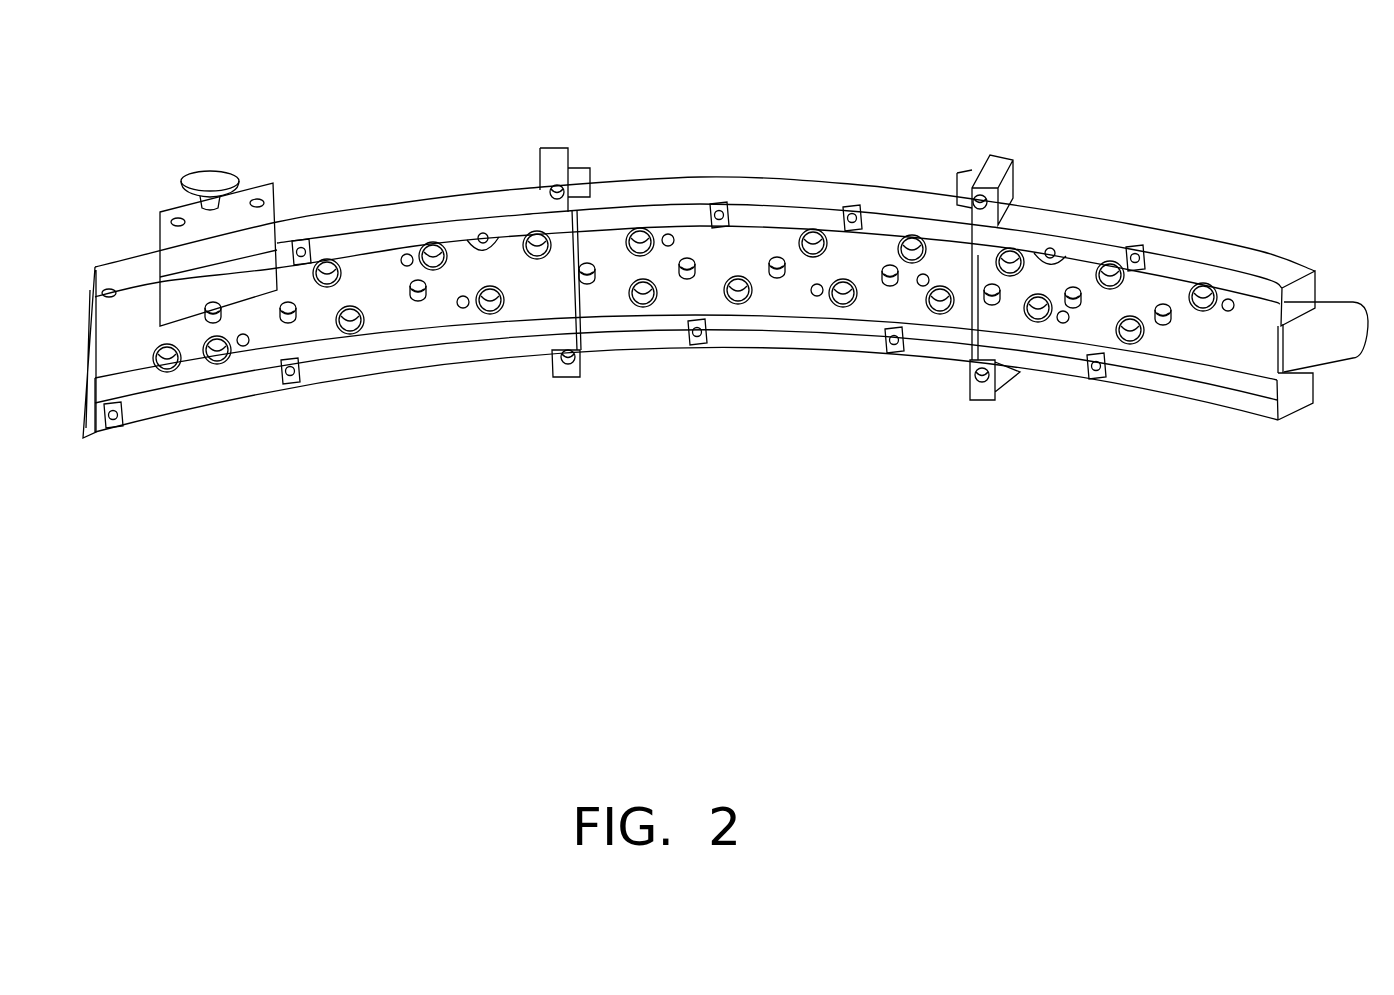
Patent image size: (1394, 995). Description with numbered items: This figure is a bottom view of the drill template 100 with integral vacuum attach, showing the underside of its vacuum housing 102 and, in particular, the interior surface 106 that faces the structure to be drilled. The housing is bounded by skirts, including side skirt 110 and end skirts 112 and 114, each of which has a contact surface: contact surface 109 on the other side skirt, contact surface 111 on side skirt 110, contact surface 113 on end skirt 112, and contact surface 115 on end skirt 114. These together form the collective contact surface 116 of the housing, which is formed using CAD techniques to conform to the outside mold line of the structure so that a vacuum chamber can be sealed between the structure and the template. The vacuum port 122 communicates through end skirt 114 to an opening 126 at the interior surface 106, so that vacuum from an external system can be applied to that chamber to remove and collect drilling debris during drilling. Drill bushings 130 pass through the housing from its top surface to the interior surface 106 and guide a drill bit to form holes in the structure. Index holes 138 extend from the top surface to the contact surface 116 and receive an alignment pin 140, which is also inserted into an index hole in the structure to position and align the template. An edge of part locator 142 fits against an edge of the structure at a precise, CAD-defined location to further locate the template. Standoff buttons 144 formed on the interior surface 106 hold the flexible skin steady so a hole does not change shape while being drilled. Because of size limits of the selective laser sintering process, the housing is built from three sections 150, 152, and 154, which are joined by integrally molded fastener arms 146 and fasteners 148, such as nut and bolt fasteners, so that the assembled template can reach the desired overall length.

The drill template 100 is at (1085, 118).
The vacuum housing 102 is at (705, 146).
The interior surface 106 is at (778, 247).
The contact surface 109 is at (1140, 380).
The side skirt 110 is at (1142, 240).
The contact surface 111 is at (1088, 257).
The end skirt 112 is at (80, 435).
The contact surface 113 is at (108, 422).
The end skirt 114 is at (1293, 397).
The contact surface 115 is at (1290, 417).
The contact surface 116 is at (1233, 287).
The vacuum port 122 is at (1327, 350).
The opening 126 is at (1263, 340).
The drill bushings 130 is at (352, 334).
The index holes 138 is at (483, 233).
The alignment pin 140 is at (390, 240).
The edge of part locator 142 is at (120, 330).
The standoff buttons 144 is at (418, 300).
The fastener arms 146 is at (580, 170).
The fasteners 148 is at (553, 190).
The section 150 is at (1235, 352).
The section 152 is at (877, 242).
The section 154 is at (362, 276).